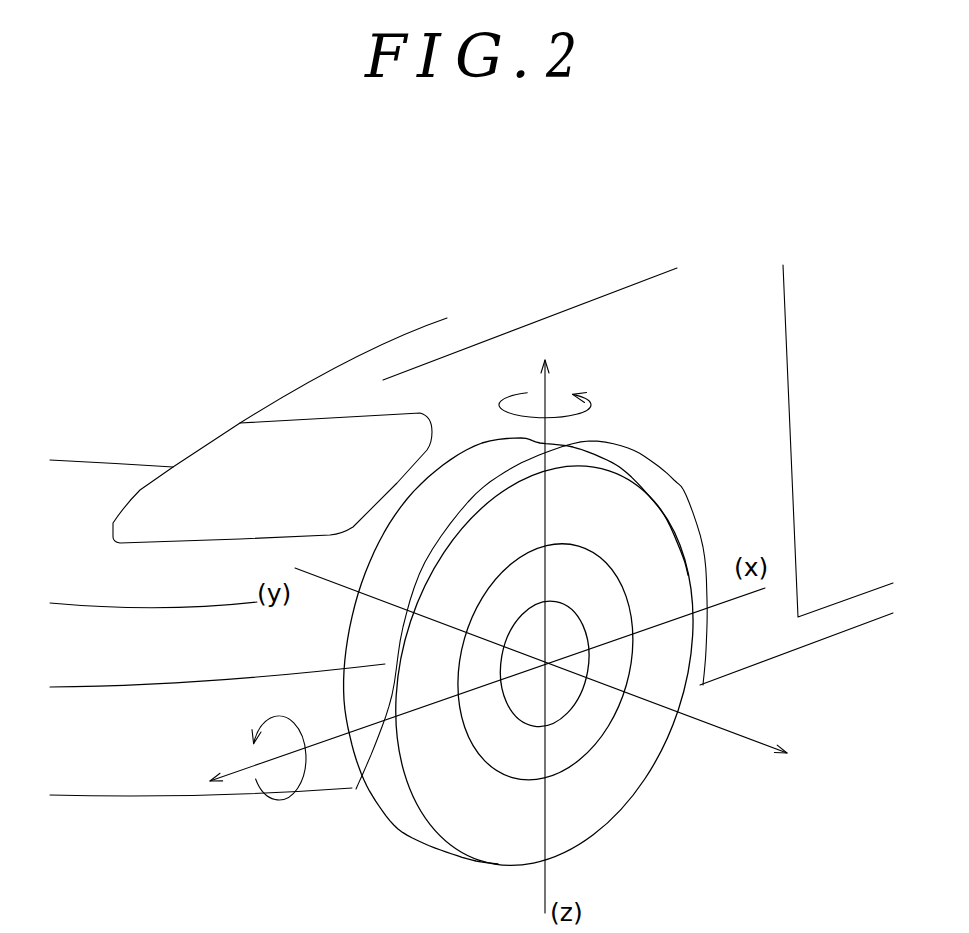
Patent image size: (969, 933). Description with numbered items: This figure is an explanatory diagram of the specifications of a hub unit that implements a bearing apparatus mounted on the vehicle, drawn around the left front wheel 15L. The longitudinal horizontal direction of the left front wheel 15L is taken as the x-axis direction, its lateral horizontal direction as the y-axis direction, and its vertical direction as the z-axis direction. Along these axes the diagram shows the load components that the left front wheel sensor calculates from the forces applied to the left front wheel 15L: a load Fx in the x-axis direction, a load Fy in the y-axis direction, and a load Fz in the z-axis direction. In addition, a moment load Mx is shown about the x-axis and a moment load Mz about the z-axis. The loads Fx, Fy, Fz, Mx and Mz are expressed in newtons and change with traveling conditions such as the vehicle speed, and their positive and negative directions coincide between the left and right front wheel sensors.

The left front wheel 15L is at (655, 481).
The load in the z-axis direction Fz is at (544, 623).
The load in the x-axis direction Fx is at (466, 689).
The load in the y-axis direction Fy is at (558, 672).
The moment load about the z-axis Mz is at (561, 403).
The moment load about the x-axis Mx is at (273, 744).